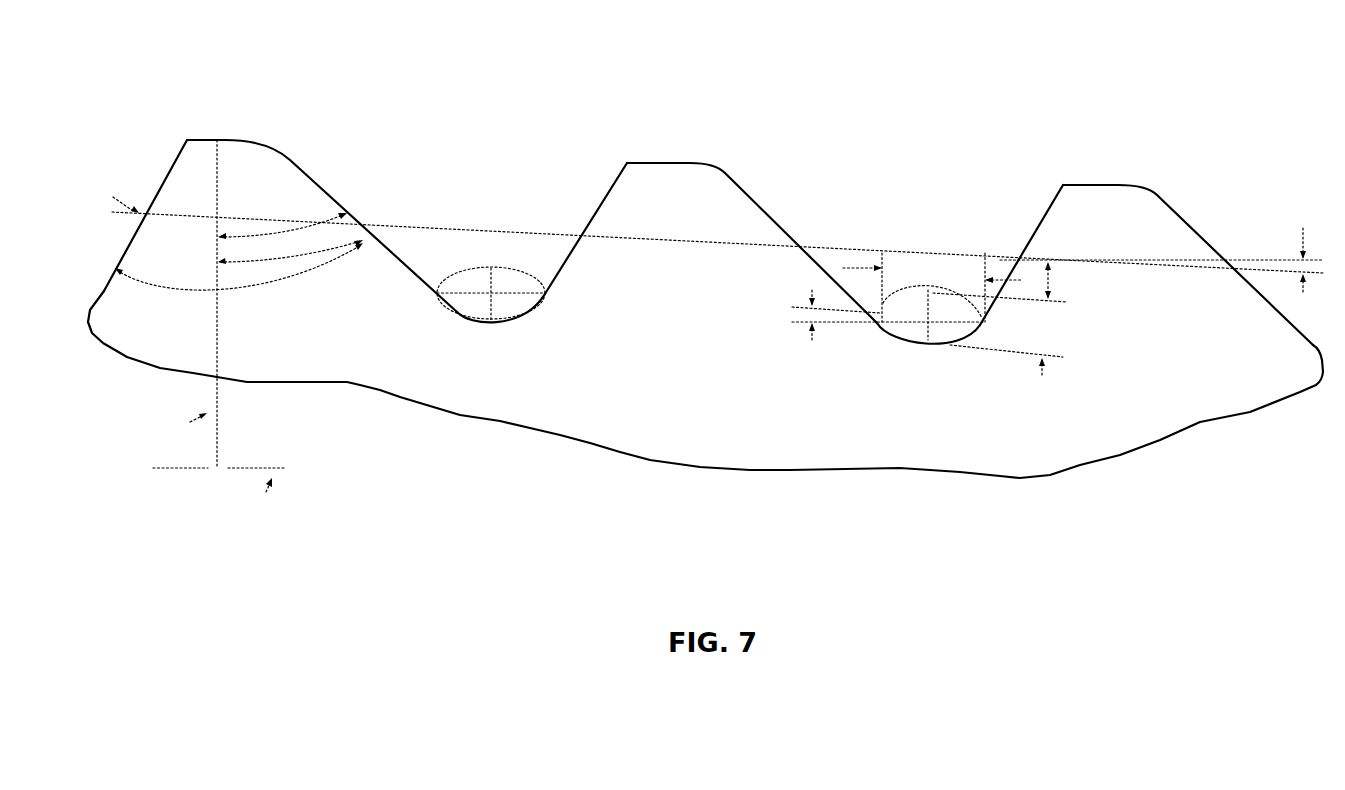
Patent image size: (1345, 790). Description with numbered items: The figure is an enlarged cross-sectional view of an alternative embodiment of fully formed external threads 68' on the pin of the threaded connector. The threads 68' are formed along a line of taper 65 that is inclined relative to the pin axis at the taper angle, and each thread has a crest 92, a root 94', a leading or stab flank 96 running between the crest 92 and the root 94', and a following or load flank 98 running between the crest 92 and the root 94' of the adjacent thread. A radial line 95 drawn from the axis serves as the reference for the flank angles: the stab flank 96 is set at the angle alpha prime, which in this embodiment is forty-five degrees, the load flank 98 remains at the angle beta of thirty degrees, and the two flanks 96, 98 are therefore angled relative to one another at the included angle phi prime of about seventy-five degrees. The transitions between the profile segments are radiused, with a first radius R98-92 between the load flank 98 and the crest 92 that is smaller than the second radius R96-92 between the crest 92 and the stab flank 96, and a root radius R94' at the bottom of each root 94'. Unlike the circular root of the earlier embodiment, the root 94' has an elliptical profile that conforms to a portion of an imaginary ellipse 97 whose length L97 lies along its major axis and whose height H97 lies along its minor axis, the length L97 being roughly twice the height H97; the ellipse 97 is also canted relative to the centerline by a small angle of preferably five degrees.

The fully formed threads 68' is at (705, 250).
The crest 92 is at (232, 139).
The stab flank 96 is at (306, 175).
The load flank 98 is at (168, 173).
The root 94' is at (696, 344).
The imaginary ellipse 97 is at (502, 270).
The line of taper 65 is at (838, 247).
The radial line 95 is at (217, 323).
The first radius R98-92 is at (1052, 177).
The second radius R96-92 is at (737, 166).
The root radius R94' is at (754, 375).
The length of ellipse L97 is at (933, 287).
The height of ellipse H97 is at (1006, 318).